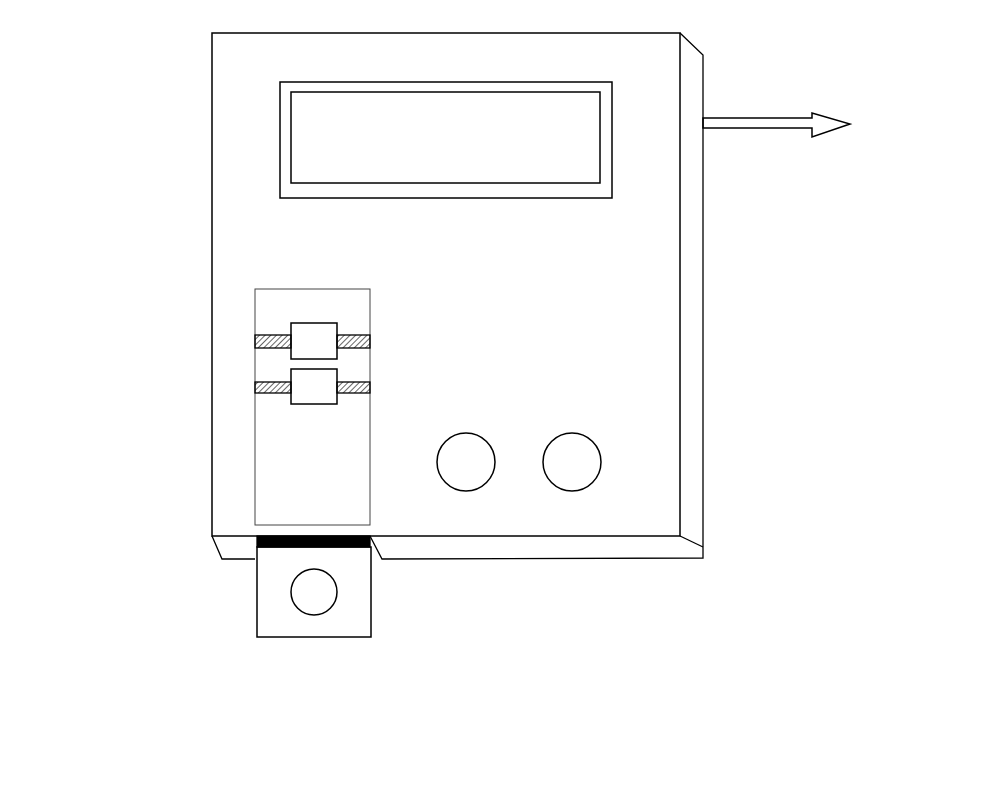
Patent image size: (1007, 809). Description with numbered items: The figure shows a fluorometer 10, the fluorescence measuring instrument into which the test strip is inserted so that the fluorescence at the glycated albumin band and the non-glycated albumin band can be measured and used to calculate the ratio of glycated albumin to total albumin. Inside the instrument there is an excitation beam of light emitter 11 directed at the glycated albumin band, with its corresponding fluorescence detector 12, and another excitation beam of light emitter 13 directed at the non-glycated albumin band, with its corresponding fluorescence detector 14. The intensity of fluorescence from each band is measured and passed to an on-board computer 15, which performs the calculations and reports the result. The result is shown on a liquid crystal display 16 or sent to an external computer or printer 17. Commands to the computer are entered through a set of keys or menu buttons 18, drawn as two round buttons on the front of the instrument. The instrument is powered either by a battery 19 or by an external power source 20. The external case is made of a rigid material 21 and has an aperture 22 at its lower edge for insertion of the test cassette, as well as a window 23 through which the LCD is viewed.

The fluorometer 10 is at (402, 405).
The excitation beam of light emitter 11 is at (314, 387).
The fluorescence detector 12 is at (323, 377).
The excitation beam of light emitter 13 is at (303, 332).
The fluorescence detector 14 is at (323, 341).
The on-board computer 15 is at (327, 228).
The liquid crystal display 16 is at (445, 137).
The external computer or printer 17 is at (788, 170).
The menu buttons 18 is at (479, 478).
The battery 19 is at (699, 479).
The external power source 20 is at (699, 523).
The rigid material 21 is at (224, 80).
The aperture 22 is at (248, 547).
The window 23 is at (272, 147).